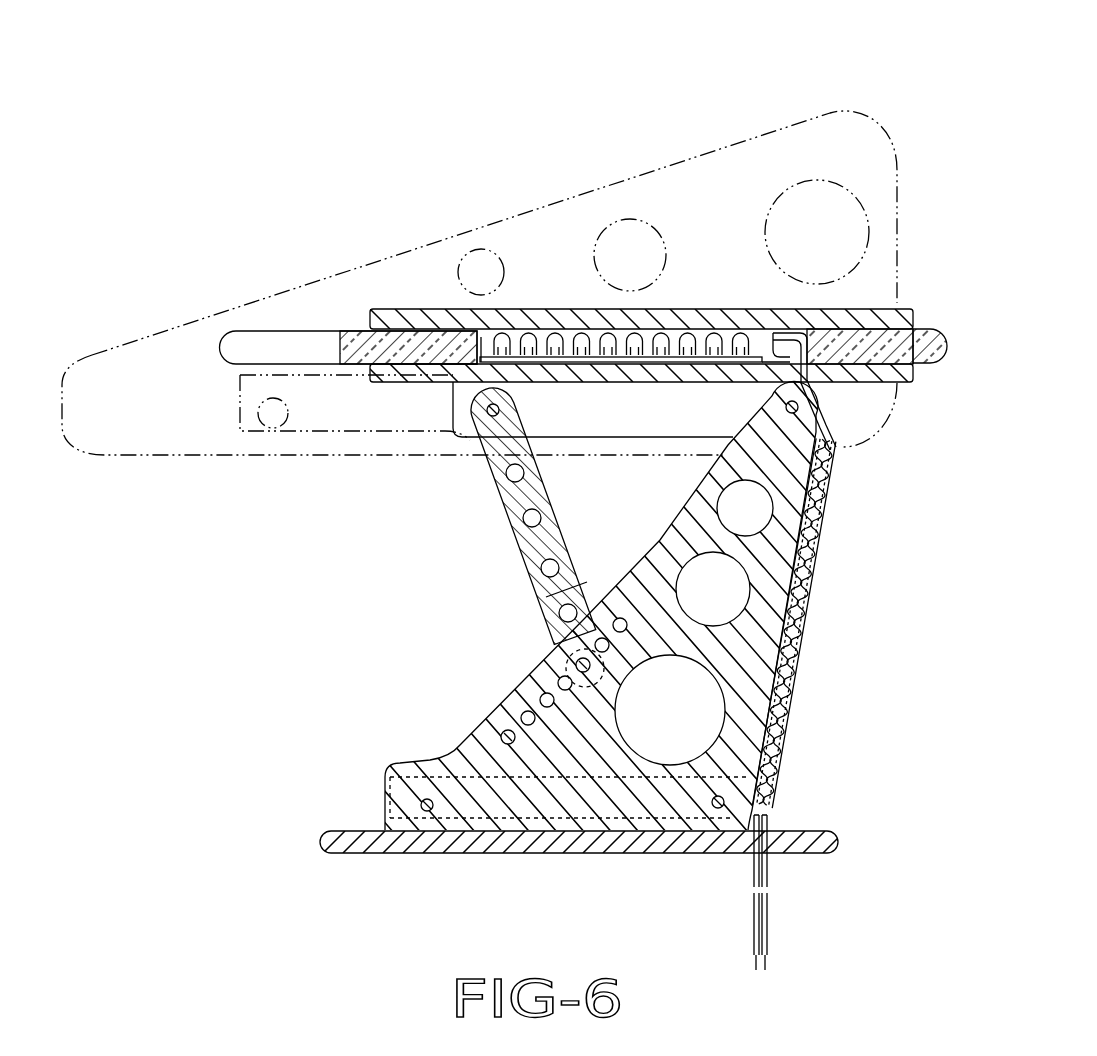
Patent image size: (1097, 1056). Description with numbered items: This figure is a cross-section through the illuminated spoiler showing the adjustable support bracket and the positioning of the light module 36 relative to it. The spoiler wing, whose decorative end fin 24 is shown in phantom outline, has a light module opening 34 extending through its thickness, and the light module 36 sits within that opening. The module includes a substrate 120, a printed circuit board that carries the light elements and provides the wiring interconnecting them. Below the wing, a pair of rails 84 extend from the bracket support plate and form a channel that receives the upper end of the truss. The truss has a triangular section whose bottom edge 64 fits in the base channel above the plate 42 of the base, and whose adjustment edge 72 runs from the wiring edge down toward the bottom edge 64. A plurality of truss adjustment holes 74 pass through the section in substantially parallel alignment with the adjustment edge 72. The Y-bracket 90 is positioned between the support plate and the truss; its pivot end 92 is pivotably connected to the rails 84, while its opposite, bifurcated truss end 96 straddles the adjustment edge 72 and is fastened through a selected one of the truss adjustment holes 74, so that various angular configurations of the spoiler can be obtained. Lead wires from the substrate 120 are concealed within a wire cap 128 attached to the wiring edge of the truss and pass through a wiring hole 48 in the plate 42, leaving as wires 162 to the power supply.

The decorative end fin 24 is at (742, 140).
The light module opening 34 is at (484, 338).
The light module 36 is at (687, 333).
The substrate 120 is at (480, 346).
The pivot end 92 is at (487, 440).
The Y-bracket 90 is at (501, 511).
The rails 84 is at (643, 405).
The adjustment edge 72 is at (615, 595).
The truss end 96 is at (556, 628).
The truss adjustment holes 74 is at (508, 730).
The wire cap 128 is at (820, 543).
The plate 42 is at (816, 830).
The bottom edge 64 is at (520, 845).
The wiring hole 48 is at (752, 855).
The wires 162 is at (768, 925).